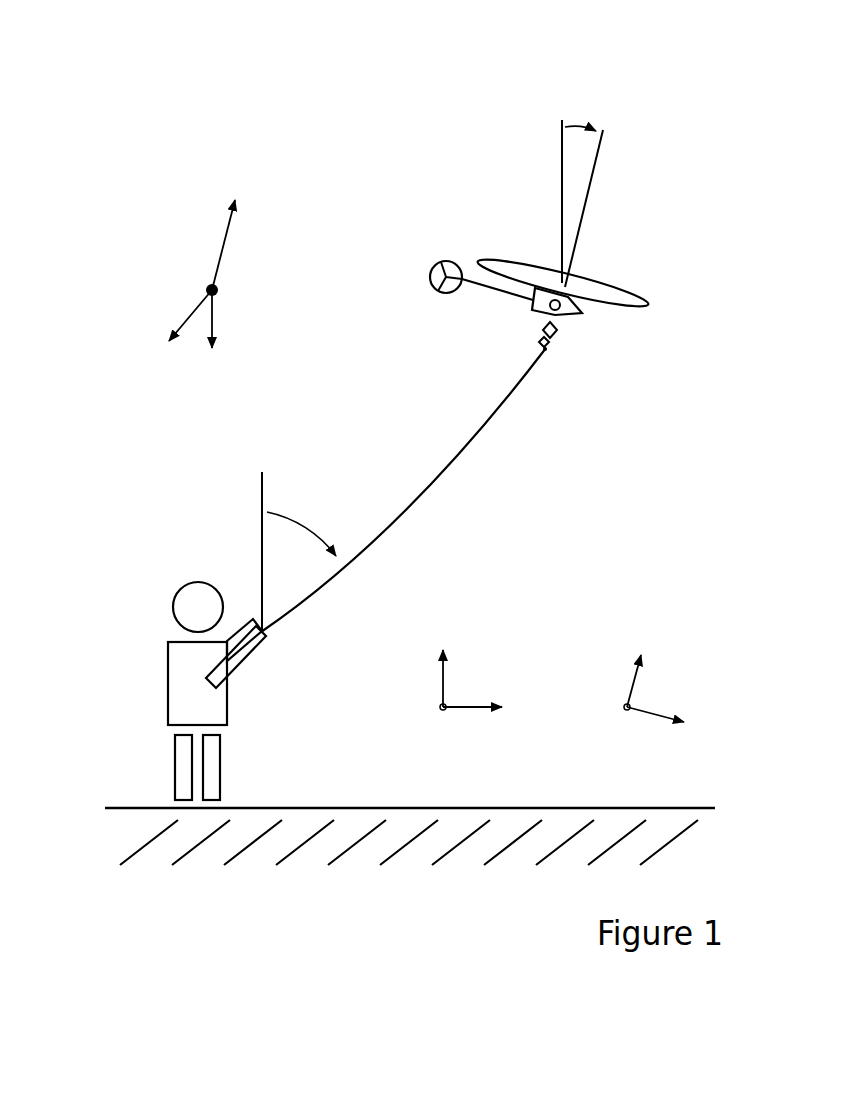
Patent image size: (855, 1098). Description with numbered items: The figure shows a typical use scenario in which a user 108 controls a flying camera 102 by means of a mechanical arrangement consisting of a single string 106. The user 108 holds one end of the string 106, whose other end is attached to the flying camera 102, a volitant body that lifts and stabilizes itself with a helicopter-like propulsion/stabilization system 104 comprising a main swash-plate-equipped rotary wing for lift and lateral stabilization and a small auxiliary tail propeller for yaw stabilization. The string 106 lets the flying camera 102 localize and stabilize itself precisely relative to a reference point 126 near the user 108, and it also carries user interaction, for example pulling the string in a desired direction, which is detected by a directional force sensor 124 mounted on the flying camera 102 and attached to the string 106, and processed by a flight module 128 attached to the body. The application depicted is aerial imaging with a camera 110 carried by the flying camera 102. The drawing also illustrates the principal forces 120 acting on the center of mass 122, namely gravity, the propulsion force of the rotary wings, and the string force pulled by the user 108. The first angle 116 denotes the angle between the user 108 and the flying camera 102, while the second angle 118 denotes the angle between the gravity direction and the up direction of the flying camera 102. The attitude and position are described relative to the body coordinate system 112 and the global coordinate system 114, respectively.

The flying camera 102 is at (672, 245).
The propulsion/stabilization system 104 is at (490, 256).
The string 106 is at (465, 452).
The user 108 is at (123, 593).
The camera 110 is at (553, 345).
The body coordinate system 112 is at (602, 613).
The global coordinate system 114 is at (430, 613).
The angle α 116 is at (332, 475).
The angle β 118 is at (598, 82).
The principal forces 120 is at (125, 185).
The center of mass 122 is at (568, 310).
The directional force sensor 124 is at (538, 347).
The reference point 126 is at (270, 633).
The flight module 128 is at (533, 311).